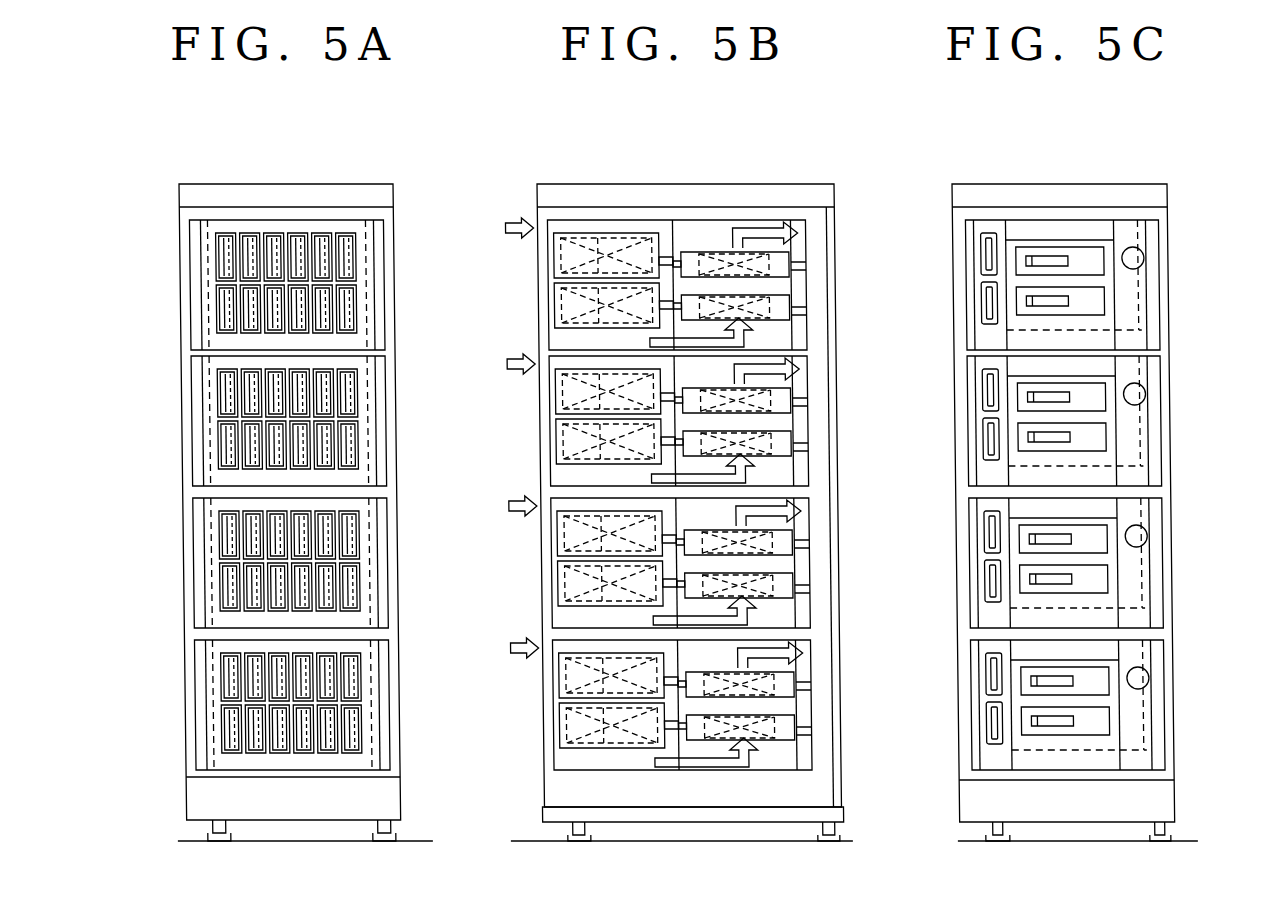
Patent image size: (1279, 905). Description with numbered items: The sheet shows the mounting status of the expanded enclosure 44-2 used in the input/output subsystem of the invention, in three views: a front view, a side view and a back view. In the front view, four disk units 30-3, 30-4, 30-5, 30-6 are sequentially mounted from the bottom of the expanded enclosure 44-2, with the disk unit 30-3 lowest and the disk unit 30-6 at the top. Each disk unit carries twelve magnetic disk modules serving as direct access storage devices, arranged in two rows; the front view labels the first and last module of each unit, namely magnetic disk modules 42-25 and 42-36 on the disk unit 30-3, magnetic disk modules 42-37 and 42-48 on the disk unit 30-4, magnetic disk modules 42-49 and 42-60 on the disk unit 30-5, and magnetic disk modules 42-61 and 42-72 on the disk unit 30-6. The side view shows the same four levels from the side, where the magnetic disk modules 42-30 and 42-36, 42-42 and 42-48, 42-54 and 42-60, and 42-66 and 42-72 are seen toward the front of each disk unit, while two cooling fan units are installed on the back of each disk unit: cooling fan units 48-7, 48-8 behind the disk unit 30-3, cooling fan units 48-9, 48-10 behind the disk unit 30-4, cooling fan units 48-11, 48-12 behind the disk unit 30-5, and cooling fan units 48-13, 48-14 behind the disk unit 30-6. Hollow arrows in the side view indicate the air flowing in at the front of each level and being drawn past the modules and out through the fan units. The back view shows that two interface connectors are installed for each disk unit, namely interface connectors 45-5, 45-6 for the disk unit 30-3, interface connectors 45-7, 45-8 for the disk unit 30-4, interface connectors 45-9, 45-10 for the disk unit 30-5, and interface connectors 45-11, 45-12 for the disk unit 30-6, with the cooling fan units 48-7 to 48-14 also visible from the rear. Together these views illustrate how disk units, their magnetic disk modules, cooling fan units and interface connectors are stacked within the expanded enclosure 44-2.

In FIG. 5A, the expanded enclosure 44-2 is at (422, 167).
In FIG. 5B, the expanded enclosure 44-2 is at (822, 167).
In FIG. 5C, the expanded enclosure 44-2 is at (1190, 167).
In FIG. 5A, the disk unit 30-6 is at (472, 245).
In FIG. 5A, the disk unit 30-5 is at (488, 435).
In FIG. 5A, the disk unit 30-4 is at (476, 578).
In FIG. 5A, the disk unit 30-3 is at (477, 681).
In FIG. 5A, the magnetic disk module 42-61 is at (213, 258).
In FIG. 5A, the magnetic disk module 42-72 is at (358, 315).
In FIG. 5B, the magnetic disk module 42-72 is at (556, 292).
In FIG. 5A, the magnetic disk module 42-49 is at (213, 398).
In FIG. 5A, the magnetic disk module 42-60 is at (358, 458).
In FIG. 5B, the magnetic disk module 42-60 is at (556, 458).
In FIG. 5A, the magnetic disk module 42-37 is at (213, 543).
In FIG. 5A, the magnetic disk module 42-48 is at (357, 600).
In FIG. 5B, the magnetic disk module 42-48 is at (557, 600).
In FIG. 5A, the magnetic disk module 42-25 is at (213, 686).
In FIG. 5A, the magnetic disk module 42-36 is at (356, 740).
In FIG. 5B, the magnetic disk module 42-36 is at (557, 735).
In FIG. 5B, the magnetic disk module 42-66 is at (573, 233).
In FIG. 5B, the magnetic disk module 42-54 is at (556, 400).
In FIG. 5B, the magnetic disk module 42-42 is at (557, 542).
In FIG. 5B, the magnetic disk module 42-30 is at (557, 685).
In FIG. 5B, the cooling fan unit 48-14 is at (777, 266).
In FIG. 5C, the cooling fan unit 48-14 is at (1090, 263).
In FIG. 5B, the cooling fan unit 48-13 is at (777, 308).
In FIG. 5C, the cooling fan unit 48-13 is at (1093, 302).
In FIG. 5B, the cooling fan unit 48-12 is at (778, 405).
In FIG. 5C, the cooling fan unit 48-12 is at (1092, 405).
In FIG. 5B, the cooling fan unit 48-11 is at (778, 449).
In FIG. 5C, the cooling fan unit 48-11 is at (1095, 447).
In FIG. 5B, the cooling fan unit 48-10 is at (778, 547).
In FIG. 5C, the cooling fan unit 48-10 is at (1095, 545).
In FIG. 5B, the cooling fan unit 48-9 is at (779, 591).
In FIG. 5C, the cooling fan unit 48-9 is at (1095, 588).
In FIG. 5B, the cooling fan unit 48-8 is at (780, 690).
In FIG. 5C, the cooling fan unit 48-8 is at (1100, 693).
In FIG. 5B, the cooling fan unit 48-7 is at (780, 734).
In FIG. 5C, the cooling fan unit 48-7 is at (1100, 735).
In FIG. 5C, the interface connector 45-12 is at (984, 253).
In FIG. 5C, the interface connector 45-11 is at (984, 306).
In FIG. 5C, the interface connector 45-10 is at (984, 394).
In FIG. 5C, the interface connector 45-9 is at (984, 453).
In FIG. 5C, the interface connector 45-8 is at (984, 536).
In FIG. 5C, the interface connector 45-7 is at (984, 596).
In FIG. 5C, the interface connector 45-6 is at (984, 672).
In FIG. 5C, the interface connector 45-5 is at (982, 735).